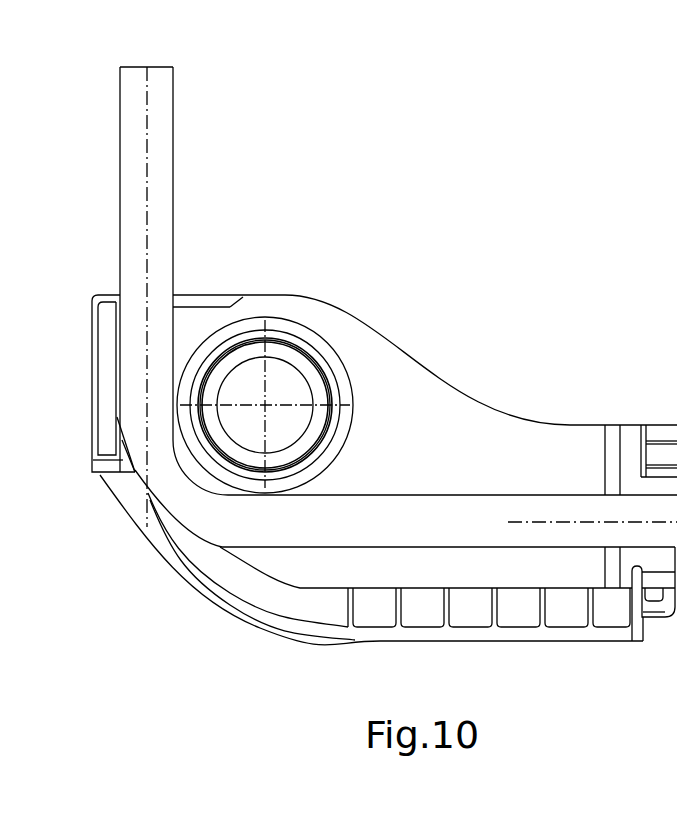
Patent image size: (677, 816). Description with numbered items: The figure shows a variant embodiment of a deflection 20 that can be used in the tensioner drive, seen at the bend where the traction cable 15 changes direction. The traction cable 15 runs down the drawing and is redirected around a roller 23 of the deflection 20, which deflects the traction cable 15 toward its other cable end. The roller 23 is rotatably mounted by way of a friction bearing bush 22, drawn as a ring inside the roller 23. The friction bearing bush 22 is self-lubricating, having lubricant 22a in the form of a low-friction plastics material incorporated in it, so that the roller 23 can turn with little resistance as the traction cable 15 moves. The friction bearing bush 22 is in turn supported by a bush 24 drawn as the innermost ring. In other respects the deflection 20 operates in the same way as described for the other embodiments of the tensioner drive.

The traction cable 15 is at (162, 132).
The deflection 20 is at (498, 438).
The friction bearing bush 22 is at (325, 375).
The lubricant 22a is at (427, 315).
The roller 23 is at (313, 343).
The bush 24 is at (279, 350).